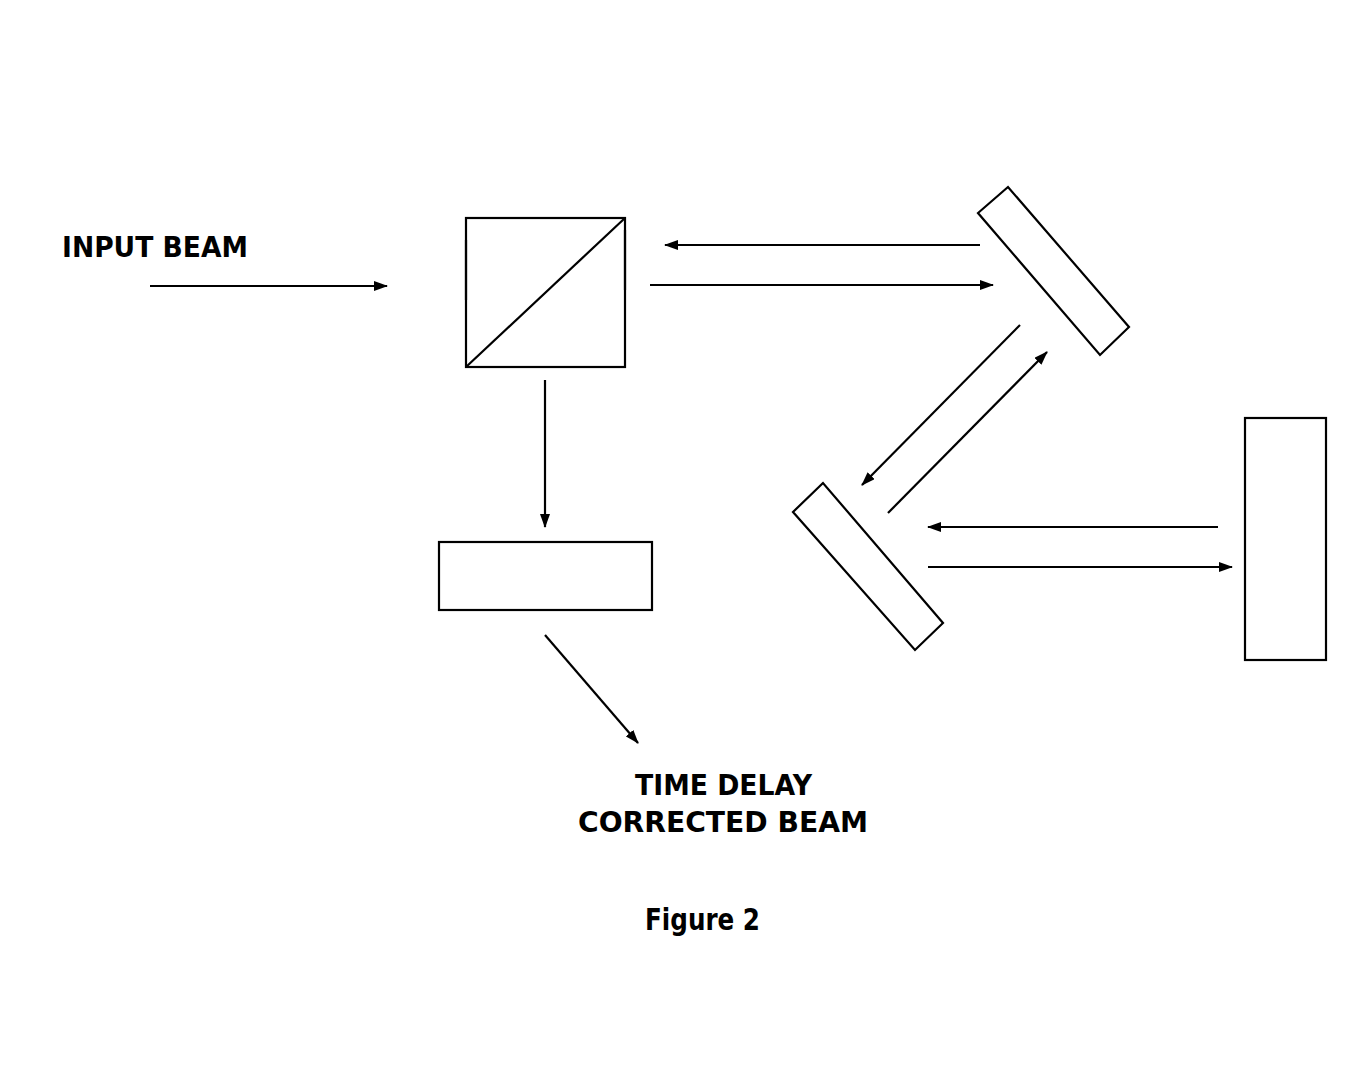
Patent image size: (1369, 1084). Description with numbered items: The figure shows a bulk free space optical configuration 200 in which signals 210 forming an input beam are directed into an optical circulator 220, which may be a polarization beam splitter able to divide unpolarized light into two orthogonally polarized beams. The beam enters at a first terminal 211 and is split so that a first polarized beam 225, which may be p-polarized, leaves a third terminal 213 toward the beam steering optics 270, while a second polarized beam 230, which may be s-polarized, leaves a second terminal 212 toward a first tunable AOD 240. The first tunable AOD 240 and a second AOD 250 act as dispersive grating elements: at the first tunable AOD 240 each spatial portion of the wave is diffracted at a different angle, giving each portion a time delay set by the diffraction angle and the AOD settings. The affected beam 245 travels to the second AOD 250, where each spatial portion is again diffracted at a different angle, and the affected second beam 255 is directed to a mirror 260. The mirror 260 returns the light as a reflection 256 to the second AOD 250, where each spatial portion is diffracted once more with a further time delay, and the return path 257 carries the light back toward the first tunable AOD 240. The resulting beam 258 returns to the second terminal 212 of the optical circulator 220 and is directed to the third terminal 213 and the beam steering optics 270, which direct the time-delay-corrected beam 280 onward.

The bulk optical configuration 200 is at (1212, 107).
The signals 210 is at (190, 288).
The first terminal 211 is at (466, 268).
The second terminal 212 is at (625, 258).
The third terminal 213 is at (507, 367).
The optical circulator 220 is at (466, 325).
The first polarized beam 225 is at (545, 432).
The second polarized beam 230 is at (742, 287).
The first tunable AOD 240 is at (1073, 257).
The affected beam 245 is at (927, 418).
The second AOD 250 is at (848, 568).
The affected second beam 255 is at (1100, 567).
The reflection 256 is at (1087, 527).
The beam returned from second mirror to first mirror 257 is at (957, 445).
The resulting beam 258 is at (835, 242).
The mirror 260 is at (1313, 415).
The beam steering optics 270 is at (610, 542).
The time-delay-corrected beam 280 is at (638, 715).